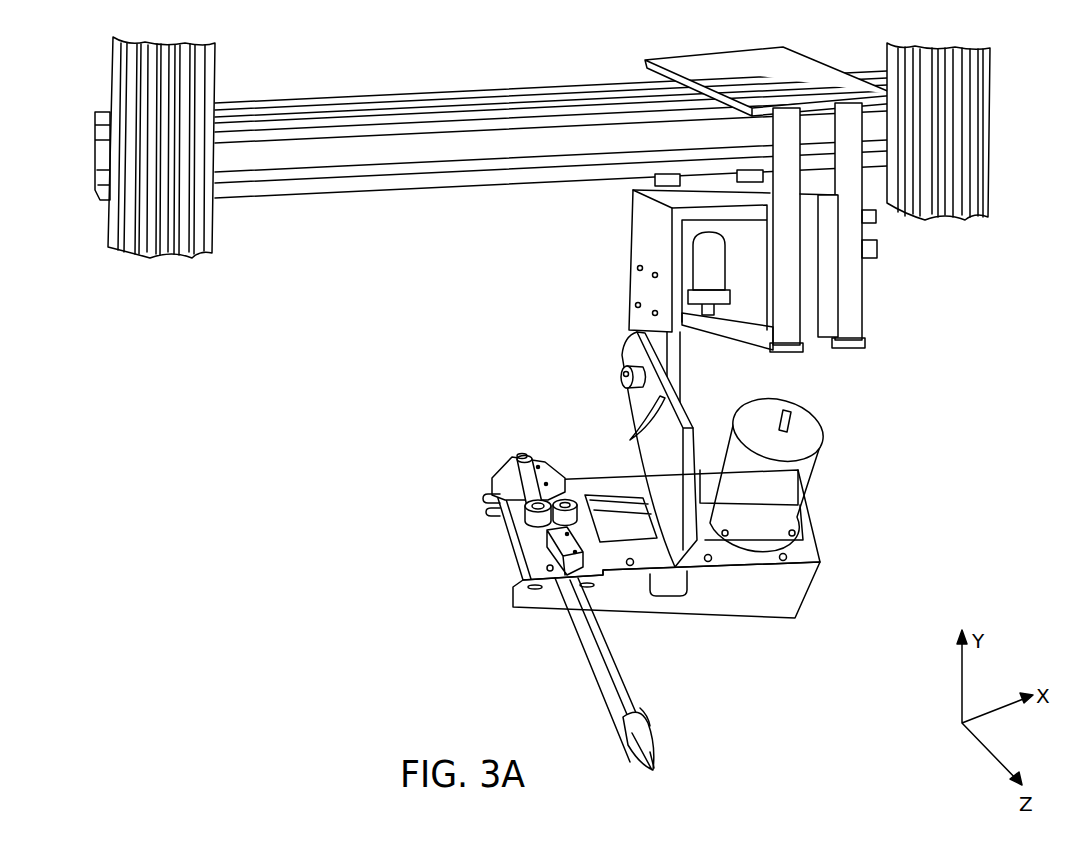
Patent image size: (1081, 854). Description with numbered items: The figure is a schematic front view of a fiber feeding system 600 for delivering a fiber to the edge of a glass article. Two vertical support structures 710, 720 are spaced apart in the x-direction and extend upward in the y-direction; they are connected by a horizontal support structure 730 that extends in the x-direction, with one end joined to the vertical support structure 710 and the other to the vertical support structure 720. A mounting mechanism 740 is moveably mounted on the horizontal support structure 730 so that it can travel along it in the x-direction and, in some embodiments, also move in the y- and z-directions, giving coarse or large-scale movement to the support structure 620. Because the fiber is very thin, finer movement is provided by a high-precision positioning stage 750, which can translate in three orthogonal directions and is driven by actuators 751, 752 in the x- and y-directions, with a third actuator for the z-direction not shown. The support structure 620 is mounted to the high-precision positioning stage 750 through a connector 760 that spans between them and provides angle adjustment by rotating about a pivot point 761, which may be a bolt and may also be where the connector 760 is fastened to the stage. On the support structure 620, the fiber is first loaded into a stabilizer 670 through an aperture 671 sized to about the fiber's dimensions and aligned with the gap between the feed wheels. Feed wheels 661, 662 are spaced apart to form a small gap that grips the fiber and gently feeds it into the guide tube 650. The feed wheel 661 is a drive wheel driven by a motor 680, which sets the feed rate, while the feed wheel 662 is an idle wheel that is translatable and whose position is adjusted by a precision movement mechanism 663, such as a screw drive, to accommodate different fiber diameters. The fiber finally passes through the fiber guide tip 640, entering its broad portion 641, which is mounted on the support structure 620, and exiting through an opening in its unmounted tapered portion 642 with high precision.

The fiber feeding system 600 is at (907, 495).
The support structure 620 is at (513, 558).
The fiber guide tip 640 is at (637, 735).
The broad portion 641 is at (648, 723).
The tapered portion 642 is at (655, 753).
The guide tube 650 is at (618, 677).
The first feed wheel 661 is at (567, 500).
The second feed wheel 662 is at (520, 515).
The precision movement mechanism 663 is at (488, 498).
The stabilizer 670 is at (500, 472).
The aperture 671 is at (520, 457).
The motor 680 is at (820, 470).
The vertical support structure 710 is at (112, 223).
The vertical support structure 720 is at (990, 160).
The horizontal support structure 730 is at (382, 175).
The mounting mechanism 740 is at (868, 218).
The high-precision positioning stage 750 is at (632, 262).
The actuator 751 is at (870, 258).
The actuator 752 is at (807, 332).
The connector 760 is at (625, 408).
The pivot point 761 is at (622, 368).